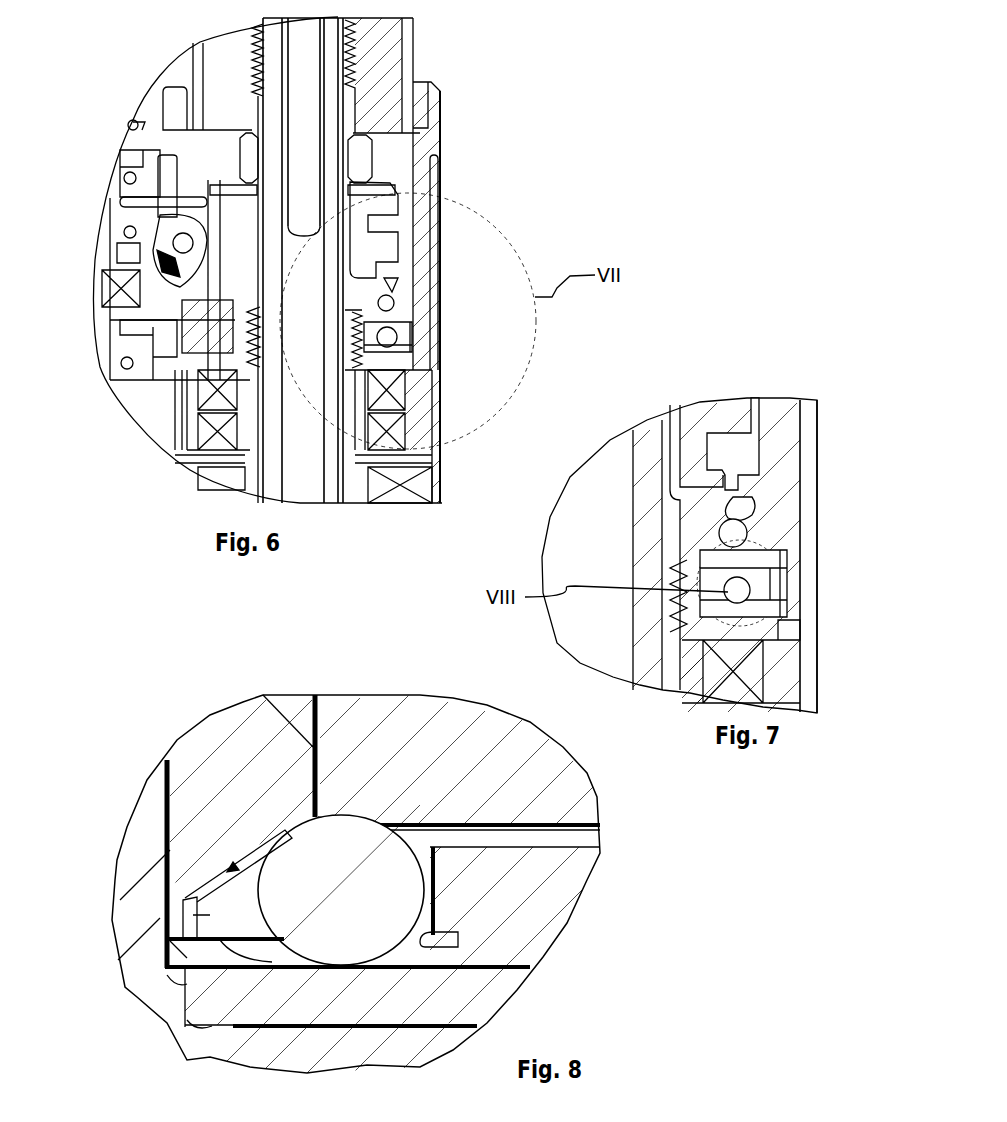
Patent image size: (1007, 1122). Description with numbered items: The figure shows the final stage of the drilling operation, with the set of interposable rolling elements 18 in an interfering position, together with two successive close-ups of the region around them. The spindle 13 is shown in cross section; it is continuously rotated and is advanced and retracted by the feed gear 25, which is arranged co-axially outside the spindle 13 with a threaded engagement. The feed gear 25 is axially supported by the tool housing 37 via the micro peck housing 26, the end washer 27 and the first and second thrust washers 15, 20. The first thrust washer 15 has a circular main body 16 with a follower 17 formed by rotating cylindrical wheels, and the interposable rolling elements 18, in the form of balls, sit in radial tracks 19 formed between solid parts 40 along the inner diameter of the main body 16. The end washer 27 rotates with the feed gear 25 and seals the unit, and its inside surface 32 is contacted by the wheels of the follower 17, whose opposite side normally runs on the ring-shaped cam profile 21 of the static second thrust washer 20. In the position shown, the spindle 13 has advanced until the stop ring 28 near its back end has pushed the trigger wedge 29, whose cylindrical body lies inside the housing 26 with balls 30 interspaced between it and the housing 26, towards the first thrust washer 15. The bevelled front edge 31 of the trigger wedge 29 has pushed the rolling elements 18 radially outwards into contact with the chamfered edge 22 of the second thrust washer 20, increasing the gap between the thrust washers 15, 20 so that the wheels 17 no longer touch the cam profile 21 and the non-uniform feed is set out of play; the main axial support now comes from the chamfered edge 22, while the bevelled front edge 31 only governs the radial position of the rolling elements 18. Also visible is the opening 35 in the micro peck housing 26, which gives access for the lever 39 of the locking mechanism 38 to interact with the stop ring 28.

In FIG. 6, the spindle 13 is at (257, 100).
In FIG. 6, the first thrust washer 15 is at (420, 337).
In FIG. 7, the first thrust washer 15 is at (793, 588).
In FIG. 8, the first thrust washer 15 is at (480, 898).
In FIG. 8, the main body 16 is at (560, 888).
In FIG. 7, the follower 17 is at (802, 570).
In FIG. 8, the follower 17 is at (557, 838).
In FIG. 6, the interposable rolling elements 18 is at (372, 337).
In FIG. 7, the interposable rolling elements 18 is at (735, 590).
In FIG. 8, the interposable rolling elements 18 is at (329, 892).
In FIG. 8, the radial tracks 19 is at (422, 941).
In FIG. 6, the second thrust washer 20 is at (157, 322).
In FIG. 7, the second thrust washer 20 is at (790, 556).
In FIG. 8, the second thrust washer 20 is at (430, 763).
In FIG. 8, the cam profile 21 is at (495, 832).
In FIG. 8, the chamfered edge 22 is at (348, 816).
In FIG. 6, the feed gear 25 is at (420, 395).
In FIG. 7, the feed gear 25 is at (788, 665).
In FIG. 8, the feed gear 25 is at (247, 1047).
In FIG. 6, the micro peck housing 26 is at (428, 137).
In FIG. 7, the micro peck housing 26 is at (782, 450).
In FIG. 8, the end washer 27 is at (485, 994).
In FIG. 6, the stop ring 28 is at (432, 188).
In FIG. 7, the stop ring 28 is at (717, 418).
In FIG. 6, the trigger wedge 29 is at (396, 280).
In FIG. 7, the trigger wedge 29 is at (725, 507).
In FIG. 8, the trigger wedge 29 is at (282, 807).
In FIG. 6, the balls 30 is at (392, 302).
In FIG. 7, the balls 30 is at (738, 530).
In FIG. 8, the bevelled front edge 31 is at (217, 872).
In FIG. 8, the inside surface 32 is at (448, 961).
In FIG. 6, the opening 35 is at (205, 202).
In FIG. 6, the tool housing 37 is at (433, 460).
In FIG. 7, the tool housing 37 is at (812, 407).
In FIG. 6, the locking mechanism 38 is at (180, 245).
In FIG. 6, the lever 39 is at (177, 262).
In FIG. 8, the solid parts 40 is at (210, 915).